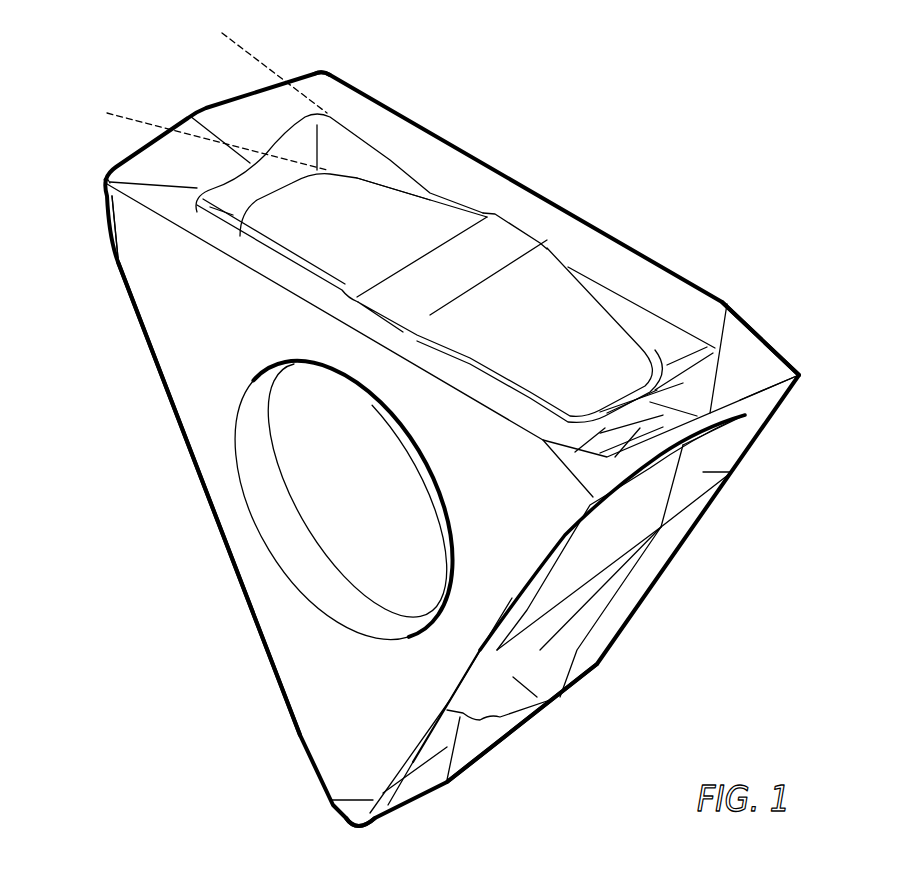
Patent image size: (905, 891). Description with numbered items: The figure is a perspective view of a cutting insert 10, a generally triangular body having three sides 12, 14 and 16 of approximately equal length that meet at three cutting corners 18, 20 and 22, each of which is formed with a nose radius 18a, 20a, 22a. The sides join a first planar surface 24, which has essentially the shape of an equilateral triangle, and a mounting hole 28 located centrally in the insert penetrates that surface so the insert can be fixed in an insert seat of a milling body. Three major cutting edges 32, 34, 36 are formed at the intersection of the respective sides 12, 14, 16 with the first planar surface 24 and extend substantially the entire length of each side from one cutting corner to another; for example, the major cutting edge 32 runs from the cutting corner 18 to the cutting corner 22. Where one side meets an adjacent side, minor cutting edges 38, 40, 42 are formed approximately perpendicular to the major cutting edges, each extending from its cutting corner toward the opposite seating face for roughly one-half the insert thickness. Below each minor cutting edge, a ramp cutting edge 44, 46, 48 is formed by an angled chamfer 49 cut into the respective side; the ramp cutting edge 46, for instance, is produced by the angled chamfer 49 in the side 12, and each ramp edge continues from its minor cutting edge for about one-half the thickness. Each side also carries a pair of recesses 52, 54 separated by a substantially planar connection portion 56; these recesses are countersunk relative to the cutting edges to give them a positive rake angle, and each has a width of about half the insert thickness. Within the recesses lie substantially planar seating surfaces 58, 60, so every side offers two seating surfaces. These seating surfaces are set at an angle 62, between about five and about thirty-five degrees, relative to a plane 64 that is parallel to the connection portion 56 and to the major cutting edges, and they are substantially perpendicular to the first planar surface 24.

The cutting insert 10 is at (655, 134).
The side 12 is at (462, 178).
The side 14 is at (130, 312).
The side 16 is at (608, 657).
The cutting corner 18 is at (96, 176).
The nose radius 18a is at (104, 184).
The cutting corner 20 is at (355, 834).
The nose radius 20a is at (352, 812).
The cutting corner 22 is at (623, 482).
The nose radius 22a is at (640, 598).
The first planar surface 24 is at (183, 322).
The mounting hole 28 is at (317, 542).
The major cutting edge 32 is at (300, 302).
The major cutting edge 34 is at (460, 727).
The major cutting edge 36 is at (287, 710).
The minor cutting edge 38 is at (140, 150).
The minor cutting edge 40 is at (700, 490).
The minor cutting edge 42 is at (383, 820).
The ramp cutting edge 44 is at (306, 68).
The ramp cutting edge 46 is at (768, 395).
The ramp cutting edge 48 is at (503, 742).
The angled chamfer 49 is at (757, 358).
The recess 52 is at (347, 156).
The recess 54 is at (578, 322).
The connection portion 56 is at (485, 263).
The seating surface 58 is at (367, 213).
The seating surface 60 is at (590, 357).
The angle 62 is at (250, 59).
The plane 64 is at (227, 33).